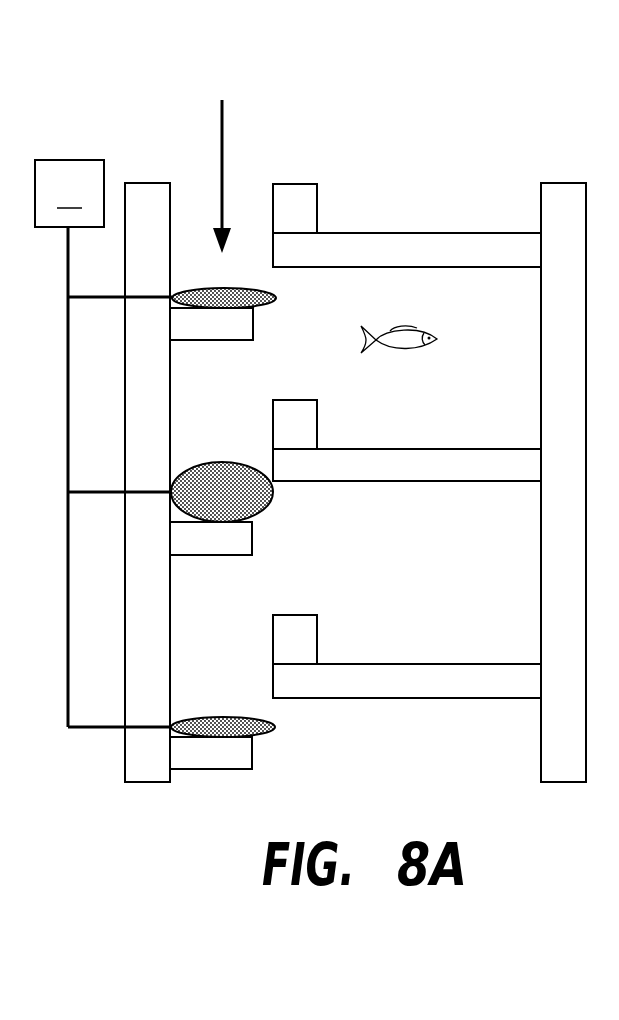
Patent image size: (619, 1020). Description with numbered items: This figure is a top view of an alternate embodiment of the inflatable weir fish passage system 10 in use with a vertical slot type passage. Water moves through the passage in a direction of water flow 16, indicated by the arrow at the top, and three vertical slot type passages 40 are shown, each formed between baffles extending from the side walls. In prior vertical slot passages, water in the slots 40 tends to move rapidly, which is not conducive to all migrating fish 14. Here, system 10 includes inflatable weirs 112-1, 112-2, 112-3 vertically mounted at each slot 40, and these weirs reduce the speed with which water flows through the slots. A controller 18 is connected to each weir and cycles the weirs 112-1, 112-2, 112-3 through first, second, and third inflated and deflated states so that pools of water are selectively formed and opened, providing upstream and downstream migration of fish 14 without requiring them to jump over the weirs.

The fish passage system 10 is at (382, 140).
The fish 14 is at (408, 353).
The direction of water flow 16 is at (222, 125).
The controller 18 is at (103, 443).
The vertical slot type passage 40 is at (262, 272).
The weir 112-1 is at (276, 298).
The weir 112-2 is at (273, 492).
The weir 112-3 is at (275, 727).